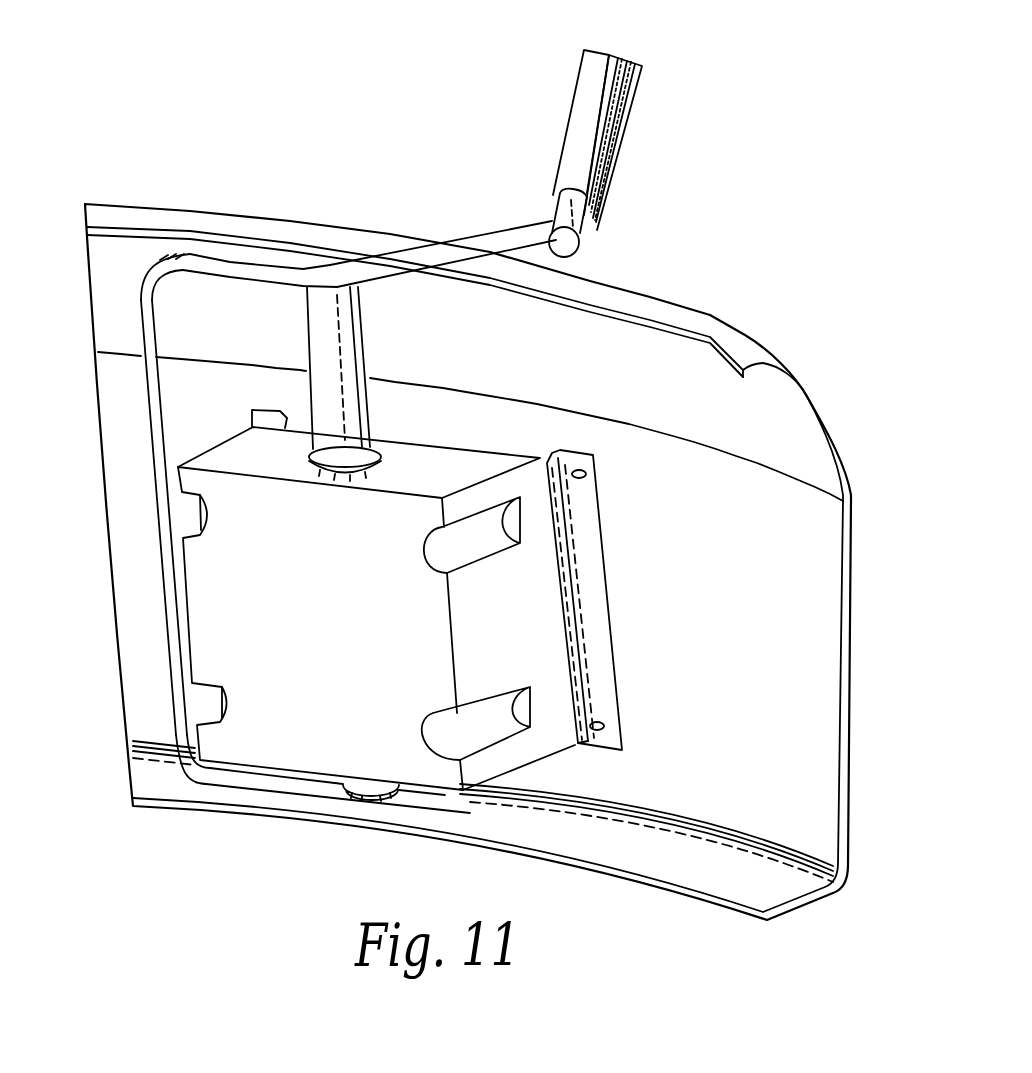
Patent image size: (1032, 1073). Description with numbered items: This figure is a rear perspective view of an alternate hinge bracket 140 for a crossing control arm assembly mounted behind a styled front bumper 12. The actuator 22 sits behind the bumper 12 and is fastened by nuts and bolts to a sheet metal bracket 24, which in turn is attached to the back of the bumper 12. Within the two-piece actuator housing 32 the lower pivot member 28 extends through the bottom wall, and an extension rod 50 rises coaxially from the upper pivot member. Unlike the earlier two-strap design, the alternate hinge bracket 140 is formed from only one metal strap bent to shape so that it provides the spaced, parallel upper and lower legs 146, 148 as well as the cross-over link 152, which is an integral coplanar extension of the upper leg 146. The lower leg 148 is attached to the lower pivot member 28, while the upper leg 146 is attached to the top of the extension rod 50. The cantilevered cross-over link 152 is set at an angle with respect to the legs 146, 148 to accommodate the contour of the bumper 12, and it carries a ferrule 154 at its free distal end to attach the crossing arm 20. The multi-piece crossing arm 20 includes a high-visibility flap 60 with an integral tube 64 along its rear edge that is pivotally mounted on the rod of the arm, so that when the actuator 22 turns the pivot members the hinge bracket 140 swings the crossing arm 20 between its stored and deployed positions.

The styled front bumper 12 is at (705, 313).
The multi-piece crossing arm 20 is at (604, 140).
The actuator 22 is at (546, 664).
The sheet metal bracket 24 is at (620, 600).
The lower pivot member 28 is at (350, 792).
The actuator housing 32 is at (322, 765).
The extension rod 50 is at (367, 333).
The flap 60 is at (620, 157).
The integral tube 64 is at (576, 112).
The alternate hinge bracket 140 is at (328, 509).
The upper leg 146 is at (261, 262).
The lower leg 148 is at (263, 778).
The cross-over link 152 is at (468, 243).
The ferrule 154 is at (585, 232).